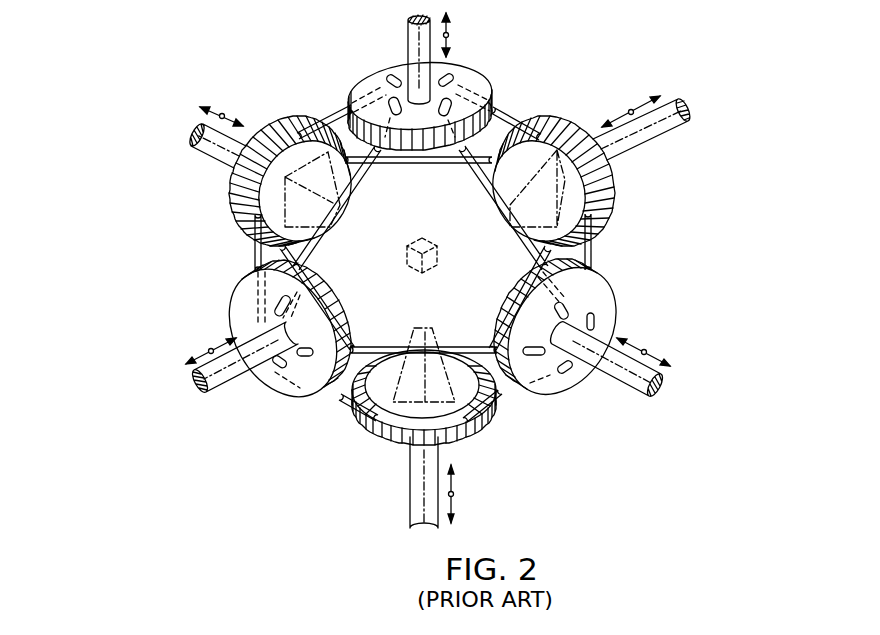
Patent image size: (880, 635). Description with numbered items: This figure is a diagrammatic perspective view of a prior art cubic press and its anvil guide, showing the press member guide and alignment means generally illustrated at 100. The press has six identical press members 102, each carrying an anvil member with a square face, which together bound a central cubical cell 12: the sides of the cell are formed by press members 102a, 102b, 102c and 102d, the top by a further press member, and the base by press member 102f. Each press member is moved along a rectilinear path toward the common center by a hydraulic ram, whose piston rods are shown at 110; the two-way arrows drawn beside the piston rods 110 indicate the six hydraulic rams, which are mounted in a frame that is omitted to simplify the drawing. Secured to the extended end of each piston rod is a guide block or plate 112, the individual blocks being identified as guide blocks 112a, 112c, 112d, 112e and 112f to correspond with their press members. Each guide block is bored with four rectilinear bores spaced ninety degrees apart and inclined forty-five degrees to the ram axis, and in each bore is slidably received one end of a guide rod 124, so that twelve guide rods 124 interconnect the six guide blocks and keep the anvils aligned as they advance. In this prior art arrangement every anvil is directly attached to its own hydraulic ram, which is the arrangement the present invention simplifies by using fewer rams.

The press member guide and alignment means 100 is at (186, 212).
The piston rod 110 is at (410, 48).
The guide block 112 is at (242, 300).
The guide block 112a is at (300, 118).
The guide block 112c is at (605, 297).
The guide block 112d is at (562, 128).
The guide block 112e is at (365, 76).
The guide block 112f is at (480, 432).
The guide rod 124 is at (254, 254).
The press member 102 is at (443, 98).
The press member 102a is at (360, 202).
The press member 102b is at (345, 280).
The press member 102c is at (493, 302).
The press member 102d is at (490, 218).
The press member 102f is at (427, 318).
The cubical cell 12 is at (415, 238).